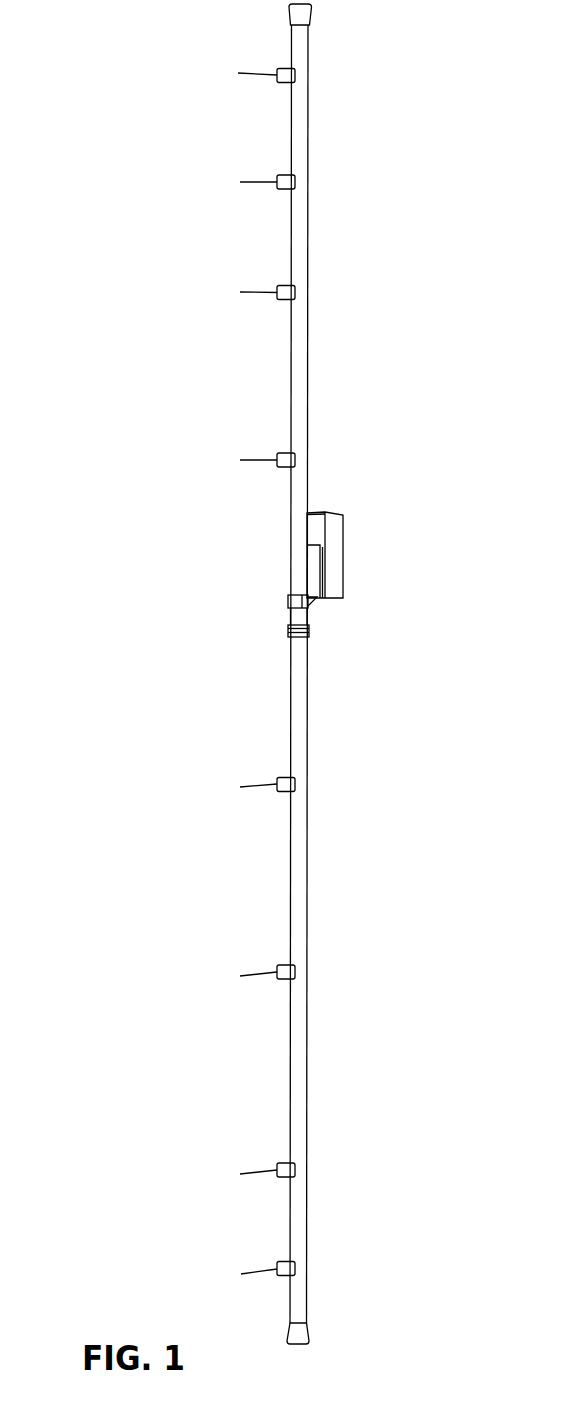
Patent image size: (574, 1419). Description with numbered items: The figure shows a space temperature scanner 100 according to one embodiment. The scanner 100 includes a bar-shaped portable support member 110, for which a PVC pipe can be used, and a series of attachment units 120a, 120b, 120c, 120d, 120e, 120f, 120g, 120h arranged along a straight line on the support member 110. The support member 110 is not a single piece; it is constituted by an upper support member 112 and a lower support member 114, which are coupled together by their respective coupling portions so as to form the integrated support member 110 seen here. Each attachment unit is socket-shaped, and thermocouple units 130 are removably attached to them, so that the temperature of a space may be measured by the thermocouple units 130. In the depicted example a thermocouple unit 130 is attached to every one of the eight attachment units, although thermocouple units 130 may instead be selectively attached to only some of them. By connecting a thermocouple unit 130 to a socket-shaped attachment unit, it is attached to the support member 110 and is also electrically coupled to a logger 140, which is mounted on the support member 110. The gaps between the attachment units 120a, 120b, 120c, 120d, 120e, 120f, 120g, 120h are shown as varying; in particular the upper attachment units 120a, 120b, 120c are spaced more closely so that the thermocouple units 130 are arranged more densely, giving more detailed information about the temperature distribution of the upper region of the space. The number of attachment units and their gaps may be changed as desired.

The space temperature scanner 100 is at (120, 328).
The support member 110 is at (157, 552).
The upper support member 112 is at (296, 554).
The lower support member 114 is at (296, 670).
The attachment unit 120a is at (295, 79).
The attachment unit 120b is at (295, 186).
The attachment unit 120c is at (295, 296).
The attachment unit 120d is at (295, 464).
The attachment unit 120e is at (295, 788).
The attachment unit 120f is at (295, 976).
The attachment unit 120g is at (295, 1174).
The attachment unit 120h is at (295, 1272).
The thermocouple unit 130 is at (280, 67).
The logger 140 is at (343, 550).